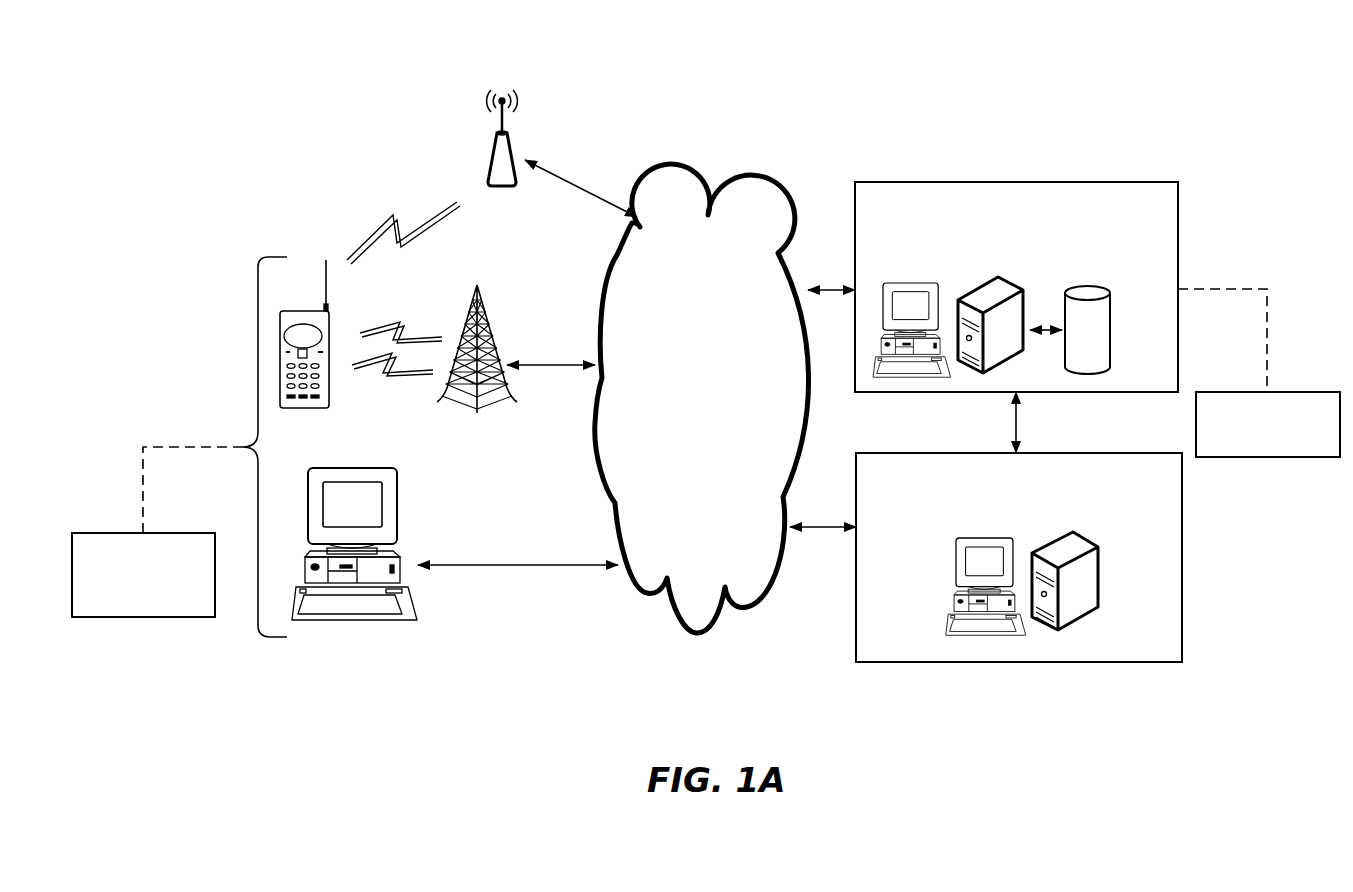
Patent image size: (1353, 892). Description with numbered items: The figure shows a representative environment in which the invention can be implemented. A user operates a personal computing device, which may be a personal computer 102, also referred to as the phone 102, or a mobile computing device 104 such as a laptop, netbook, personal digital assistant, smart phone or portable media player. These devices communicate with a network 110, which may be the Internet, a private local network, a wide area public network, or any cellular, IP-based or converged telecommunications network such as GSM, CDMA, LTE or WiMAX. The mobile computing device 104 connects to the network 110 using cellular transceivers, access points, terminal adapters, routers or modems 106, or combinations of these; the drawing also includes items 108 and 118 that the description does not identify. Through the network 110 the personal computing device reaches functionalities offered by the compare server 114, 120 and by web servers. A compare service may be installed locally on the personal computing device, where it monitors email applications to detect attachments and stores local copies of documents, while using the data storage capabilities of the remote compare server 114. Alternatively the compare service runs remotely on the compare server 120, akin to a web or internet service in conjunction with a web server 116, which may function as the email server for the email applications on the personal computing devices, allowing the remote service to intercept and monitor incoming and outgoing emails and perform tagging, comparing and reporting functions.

The personal computer 102 is at (330, 278).
The mobile computing device 104 is at (423, 500).
The access points, terminal adapters, routers or modems 106 is at (490, 303).
The wireless access point 108 is at (520, 95).
The network 110 is at (702, 398).
The compare server 114 is at (993, 306).
The web server 116 is at (910, 277).
The database 118 is at (1090, 285).
The compare server 120 is at (986, 545).